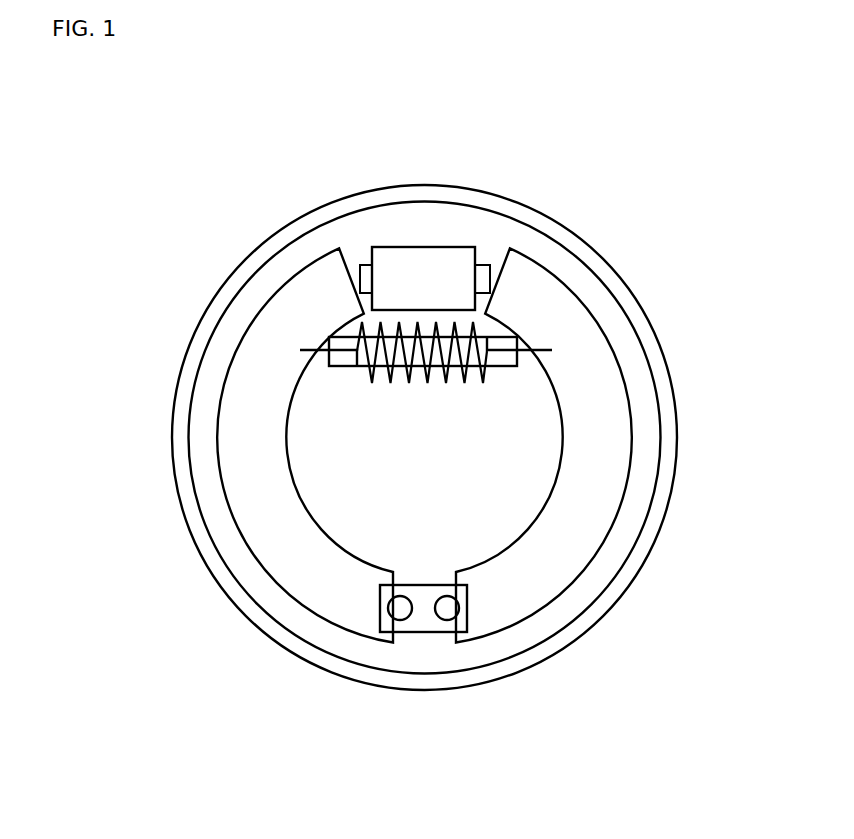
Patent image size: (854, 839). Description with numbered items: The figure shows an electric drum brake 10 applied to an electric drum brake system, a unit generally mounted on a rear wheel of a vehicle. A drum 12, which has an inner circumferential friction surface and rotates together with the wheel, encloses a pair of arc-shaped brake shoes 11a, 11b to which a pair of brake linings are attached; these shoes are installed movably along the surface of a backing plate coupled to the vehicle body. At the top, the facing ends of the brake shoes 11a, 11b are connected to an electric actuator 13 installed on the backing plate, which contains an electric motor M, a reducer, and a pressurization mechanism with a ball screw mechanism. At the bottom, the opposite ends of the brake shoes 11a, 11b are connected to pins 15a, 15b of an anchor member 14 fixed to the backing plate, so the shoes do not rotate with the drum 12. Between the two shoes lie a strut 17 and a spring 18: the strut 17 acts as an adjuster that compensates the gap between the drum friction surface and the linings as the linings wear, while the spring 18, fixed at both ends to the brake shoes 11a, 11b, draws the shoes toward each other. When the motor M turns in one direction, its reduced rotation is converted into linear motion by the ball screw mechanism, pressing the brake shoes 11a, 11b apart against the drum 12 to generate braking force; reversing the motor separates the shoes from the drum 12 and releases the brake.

The electric drum brake 10 is at (542, 170).
The brake shoe 11a is at (243, 448).
The brake shoe 11b is at (605, 443).
The drum 12 is at (617, 590).
The electric actuator 13 is at (388, 253).
The anchor member 14 is at (424, 583).
The pin 15a is at (403, 617).
The pin 15b is at (447, 617).
The strut 17 is at (508, 358).
The spring 18 is at (425, 370).